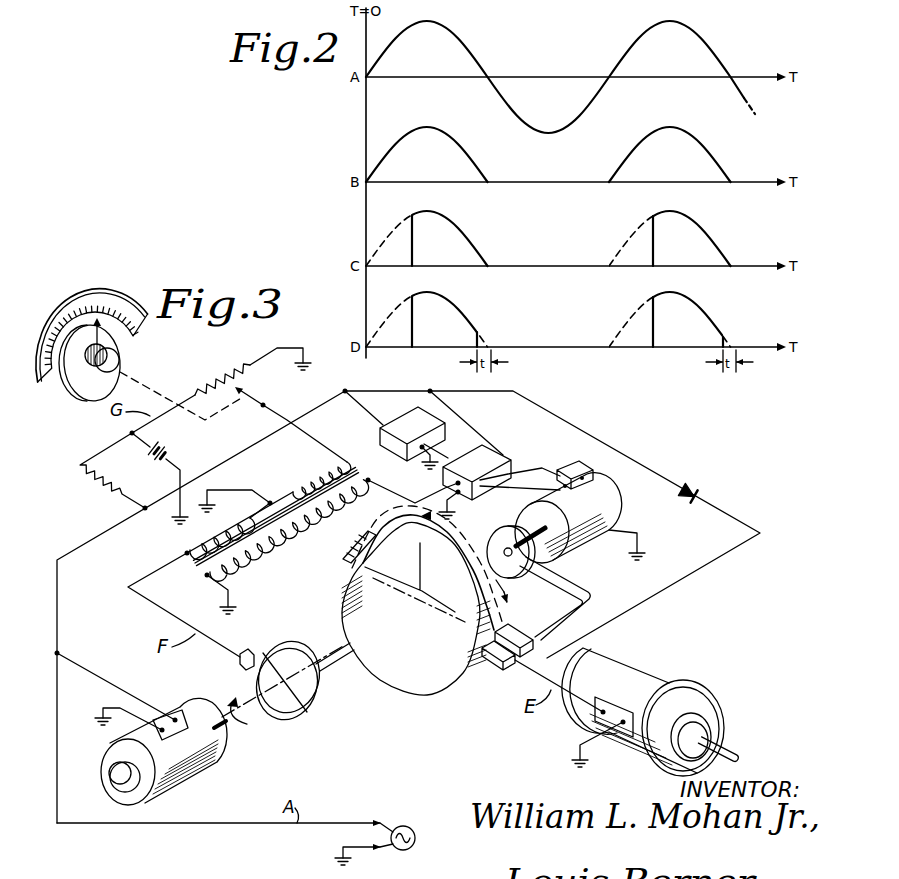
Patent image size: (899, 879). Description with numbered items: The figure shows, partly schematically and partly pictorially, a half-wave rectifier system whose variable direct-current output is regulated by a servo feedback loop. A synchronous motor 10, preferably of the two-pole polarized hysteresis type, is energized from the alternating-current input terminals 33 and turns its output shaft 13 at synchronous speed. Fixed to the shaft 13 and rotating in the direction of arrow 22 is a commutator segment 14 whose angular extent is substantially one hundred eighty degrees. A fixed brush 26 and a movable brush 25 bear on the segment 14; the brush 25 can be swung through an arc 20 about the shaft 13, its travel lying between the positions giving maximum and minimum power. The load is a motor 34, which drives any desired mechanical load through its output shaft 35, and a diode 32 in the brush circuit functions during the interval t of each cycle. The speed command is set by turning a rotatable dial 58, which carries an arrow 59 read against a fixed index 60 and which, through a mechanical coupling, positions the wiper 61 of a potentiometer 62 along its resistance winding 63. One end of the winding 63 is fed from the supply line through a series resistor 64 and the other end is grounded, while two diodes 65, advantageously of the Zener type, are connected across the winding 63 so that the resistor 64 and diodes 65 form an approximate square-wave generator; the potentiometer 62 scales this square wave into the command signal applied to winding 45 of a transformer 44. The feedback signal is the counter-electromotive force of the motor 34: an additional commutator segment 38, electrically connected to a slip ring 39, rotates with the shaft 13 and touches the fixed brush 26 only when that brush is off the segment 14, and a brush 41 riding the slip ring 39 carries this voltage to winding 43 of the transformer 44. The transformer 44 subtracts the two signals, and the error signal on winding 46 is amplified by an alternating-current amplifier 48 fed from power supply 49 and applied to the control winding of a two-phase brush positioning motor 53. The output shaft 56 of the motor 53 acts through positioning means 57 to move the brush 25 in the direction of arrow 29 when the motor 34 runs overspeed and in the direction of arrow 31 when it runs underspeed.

The synchronous motor 10 is at (190, 774).
The output shaft 13 is at (330, 655).
The commutator segment 14 is at (422, 695).
The arc 20 is at (506, 587).
The arrow 22 is at (238, 722).
The movable brush 25 is at (538, 643).
The fixed brush 26 is at (503, 670).
The arrow 29 is at (440, 517).
The arrow 31 is at (505, 598).
The diode 32 is at (691, 486).
The A.C. input terminals 33 is at (404, 826).
The motor 34 is at (667, 673).
The output shaft 35 is at (731, 749).
The additional commutator segment 38 is at (356, 538).
The slip ring 39 is at (287, 715).
The brush 41 is at (238, 664).
The winding 43 is at (183, 546).
The transformer 44 is at (362, 466).
The winding 45 is at (311, 470).
The winding 46 is at (277, 535).
The A.C. amplifier 48 is at (468, 458).
The power supply 49 is at (381, 428).
The brush positioning motor 53 is at (612, 506).
The output shaft 56 is at (540, 560).
The positioning means 57 is at (592, 600).
The rotatable dial 58 is at (80, 393).
The arrow 59 is at (103, 345).
The fixed index 60 is at (118, 297).
The wiper 61 is at (246, 398).
The potentiometer 62 is at (212, 380).
The resistance winding 63 is at (196, 392).
The series resistor 64 is at (85, 488).
The diodes 65 is at (170, 450).